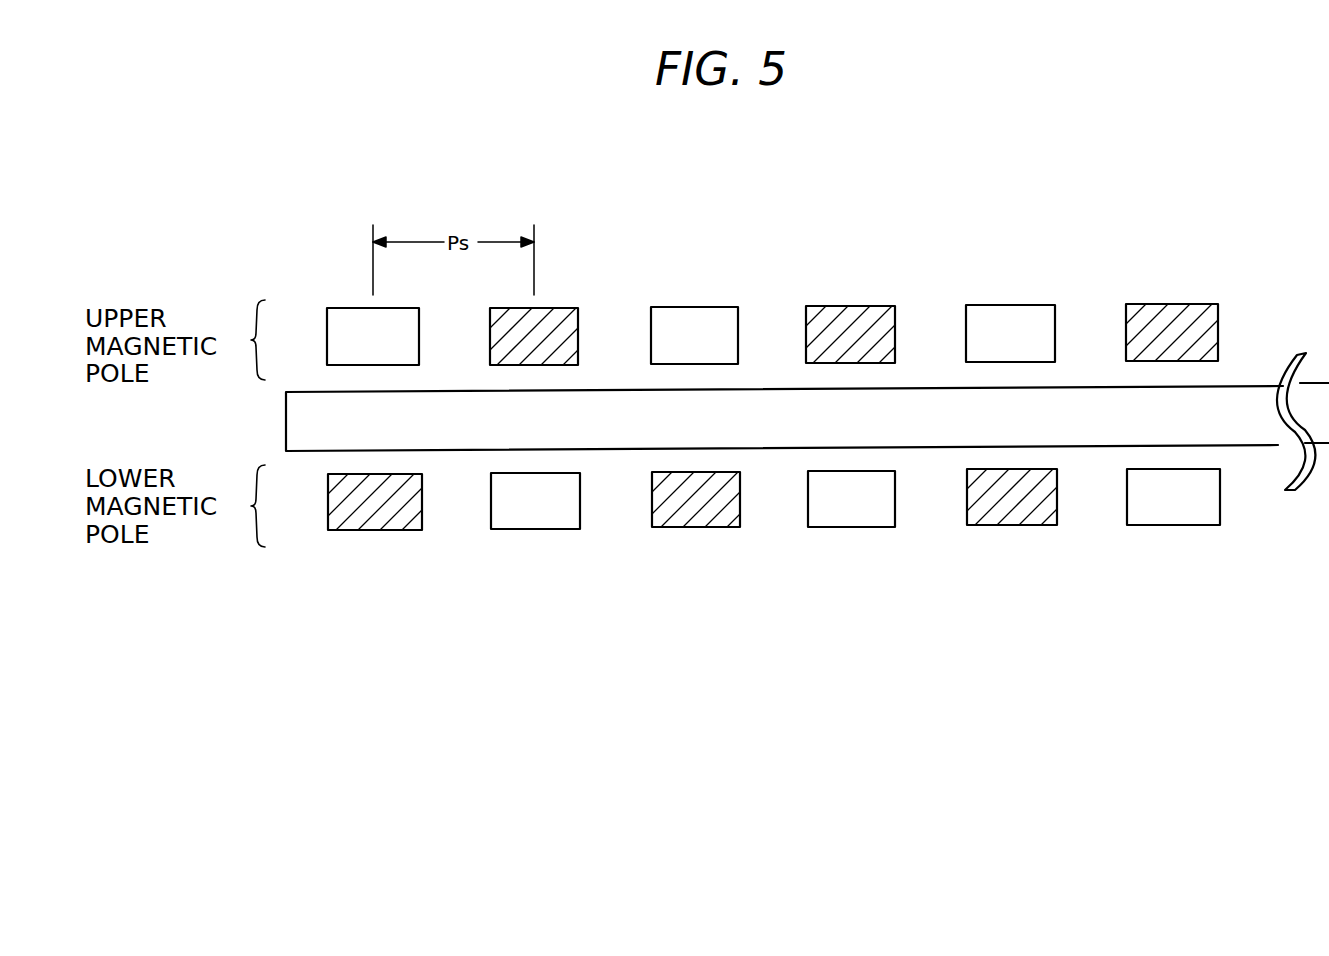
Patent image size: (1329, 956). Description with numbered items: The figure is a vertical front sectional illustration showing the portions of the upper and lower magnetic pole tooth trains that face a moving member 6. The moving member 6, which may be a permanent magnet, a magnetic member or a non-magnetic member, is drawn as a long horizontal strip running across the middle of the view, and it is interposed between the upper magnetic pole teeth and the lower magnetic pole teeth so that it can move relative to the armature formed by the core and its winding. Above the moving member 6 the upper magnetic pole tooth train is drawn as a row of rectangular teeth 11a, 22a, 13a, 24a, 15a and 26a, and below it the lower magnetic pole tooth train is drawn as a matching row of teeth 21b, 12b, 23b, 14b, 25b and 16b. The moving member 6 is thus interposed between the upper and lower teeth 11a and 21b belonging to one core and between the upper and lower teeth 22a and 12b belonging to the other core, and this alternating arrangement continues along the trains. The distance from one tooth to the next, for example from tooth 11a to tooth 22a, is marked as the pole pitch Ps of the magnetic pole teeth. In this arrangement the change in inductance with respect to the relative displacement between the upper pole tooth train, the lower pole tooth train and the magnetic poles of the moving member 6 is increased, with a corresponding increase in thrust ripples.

The moving member 6 is at (1233, 383).
The upper magnetic pole tooth 11a is at (345, 308).
The upper magnetic pole tooth 22a is at (568, 308).
The upper magnetic pole tooth 13a is at (697, 306).
The upper magnetic pole tooth 24a is at (848, 306).
The upper magnetic pole tooth 15a is at (1010, 304).
The upper magnetic pole tooth 26a is at (1165, 304).
The lower magnetic pole tooth 21b is at (378, 533).
The lower magnetic pole tooth 12b is at (537, 532).
The lower magnetic pole tooth 23b is at (697, 530).
The lower magnetic pole tooth 14b is at (851, 530).
The lower magnetic pole tooth 25b is at (1020, 528).
The lower magnetic pole tooth 16b is at (1178, 528).